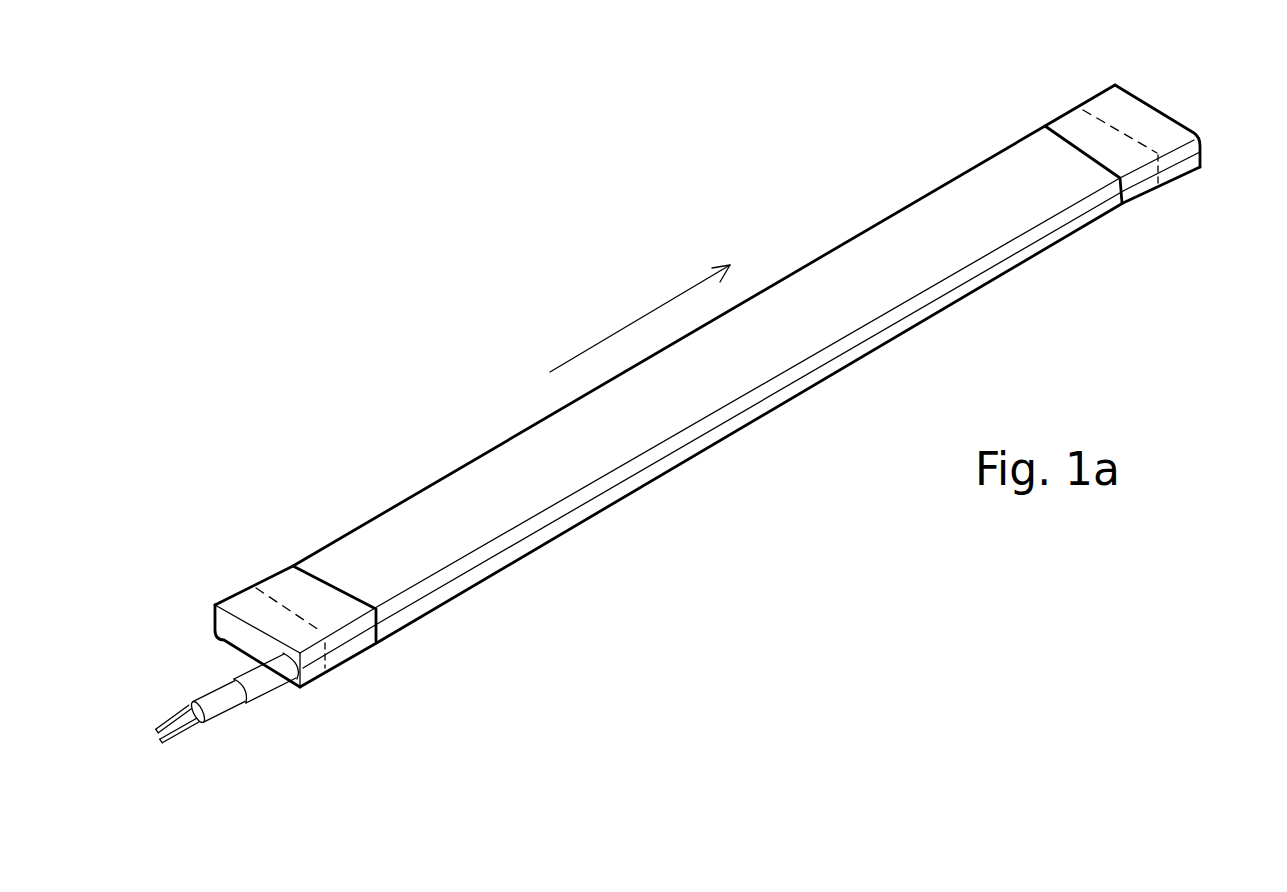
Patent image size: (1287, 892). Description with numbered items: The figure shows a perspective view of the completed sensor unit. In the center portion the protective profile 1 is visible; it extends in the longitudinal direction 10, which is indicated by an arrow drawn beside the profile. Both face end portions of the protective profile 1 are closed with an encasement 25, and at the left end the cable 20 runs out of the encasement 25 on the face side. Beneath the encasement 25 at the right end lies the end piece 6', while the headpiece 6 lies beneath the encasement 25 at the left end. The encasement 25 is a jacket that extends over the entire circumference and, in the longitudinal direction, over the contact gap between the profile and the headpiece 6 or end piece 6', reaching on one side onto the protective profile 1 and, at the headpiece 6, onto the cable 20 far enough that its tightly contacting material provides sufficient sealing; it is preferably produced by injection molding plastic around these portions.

The protective profile 1 is at (550, 550).
The headpiece 6 is at (295, 612).
The end piece 6' is at (1092, 110).
The longitudinal direction 10 is at (612, 331).
The cable 20 is at (242, 723).
The encasement 25 is at (354, 671).